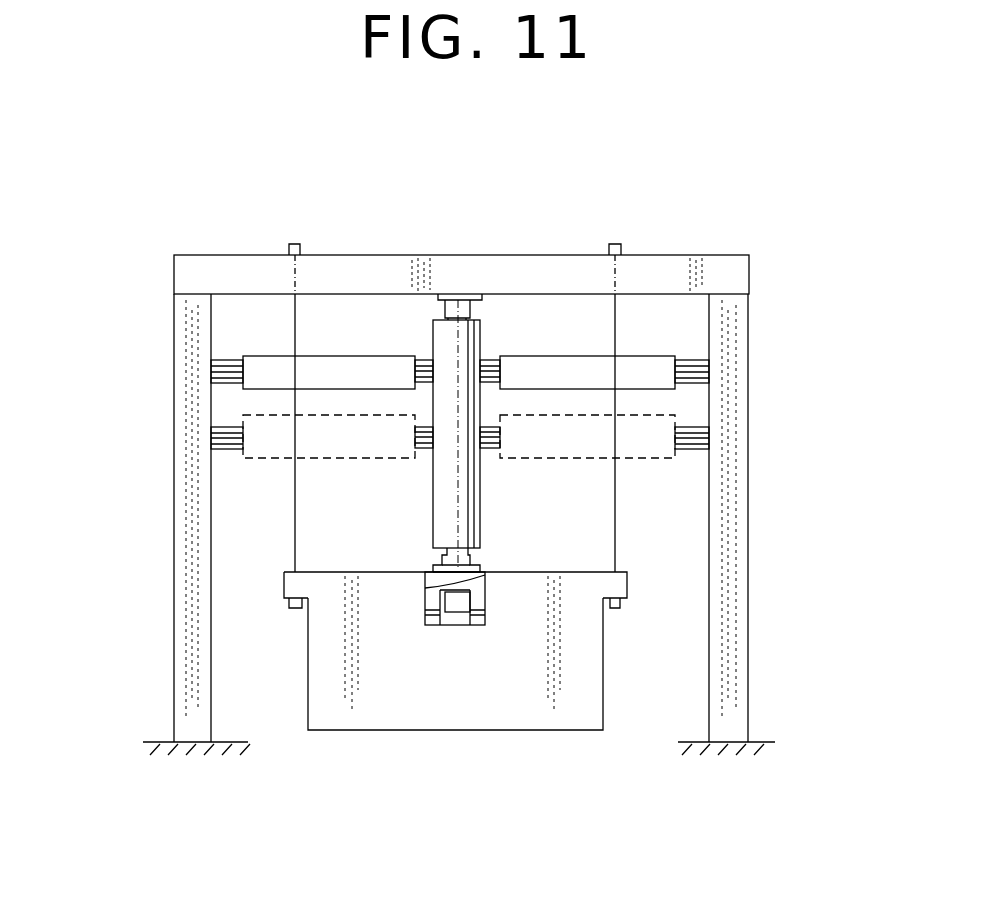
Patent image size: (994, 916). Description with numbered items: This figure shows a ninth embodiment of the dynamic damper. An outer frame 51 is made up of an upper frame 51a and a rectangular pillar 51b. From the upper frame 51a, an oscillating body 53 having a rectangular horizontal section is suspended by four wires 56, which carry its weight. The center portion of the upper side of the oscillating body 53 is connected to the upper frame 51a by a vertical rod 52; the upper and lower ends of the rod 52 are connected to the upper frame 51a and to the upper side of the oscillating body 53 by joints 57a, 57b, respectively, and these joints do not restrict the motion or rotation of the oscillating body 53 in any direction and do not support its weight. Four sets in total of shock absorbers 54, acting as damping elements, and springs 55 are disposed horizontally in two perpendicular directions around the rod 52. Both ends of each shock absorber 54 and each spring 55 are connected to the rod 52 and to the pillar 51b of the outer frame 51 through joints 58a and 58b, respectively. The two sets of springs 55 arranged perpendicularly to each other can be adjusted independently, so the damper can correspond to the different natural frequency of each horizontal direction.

The outer frame 51 is at (545, 270).
The upper frame 51a is at (690, 268).
The rectangular pillar 51b is at (748, 587).
The rod 52 is at (435, 296).
The oscillating body 53 is at (415, 718).
The shock absorber 54 is at (665, 362).
The spring 55 is at (665, 416).
The wire 56 is at (615, 533).
The joint 57a is at (458, 295).
The joint 57b is at (480, 600).
The joint 58a is at (427, 348).
The joint 58b is at (215, 378).